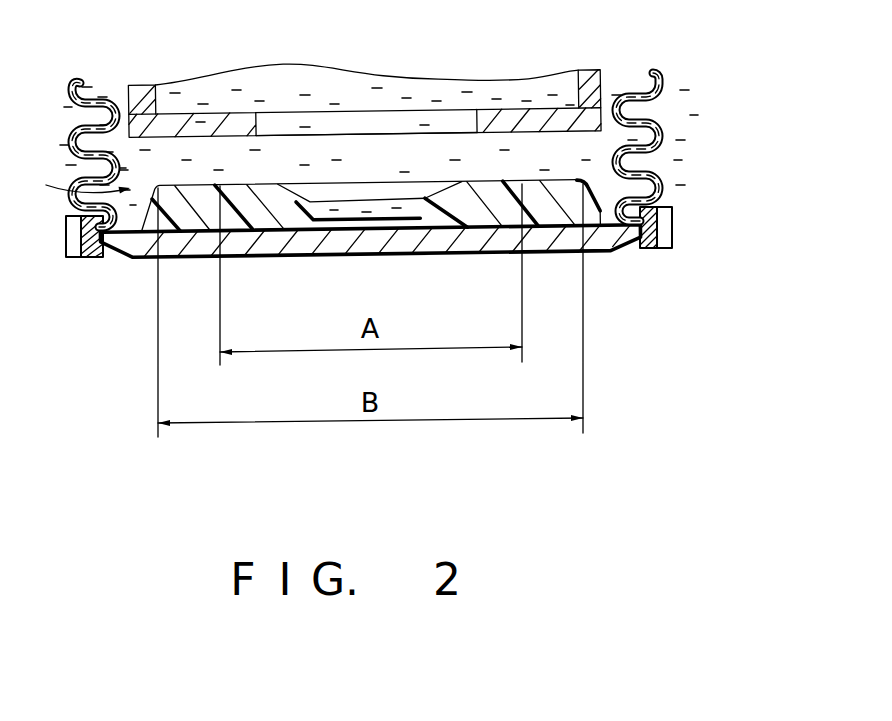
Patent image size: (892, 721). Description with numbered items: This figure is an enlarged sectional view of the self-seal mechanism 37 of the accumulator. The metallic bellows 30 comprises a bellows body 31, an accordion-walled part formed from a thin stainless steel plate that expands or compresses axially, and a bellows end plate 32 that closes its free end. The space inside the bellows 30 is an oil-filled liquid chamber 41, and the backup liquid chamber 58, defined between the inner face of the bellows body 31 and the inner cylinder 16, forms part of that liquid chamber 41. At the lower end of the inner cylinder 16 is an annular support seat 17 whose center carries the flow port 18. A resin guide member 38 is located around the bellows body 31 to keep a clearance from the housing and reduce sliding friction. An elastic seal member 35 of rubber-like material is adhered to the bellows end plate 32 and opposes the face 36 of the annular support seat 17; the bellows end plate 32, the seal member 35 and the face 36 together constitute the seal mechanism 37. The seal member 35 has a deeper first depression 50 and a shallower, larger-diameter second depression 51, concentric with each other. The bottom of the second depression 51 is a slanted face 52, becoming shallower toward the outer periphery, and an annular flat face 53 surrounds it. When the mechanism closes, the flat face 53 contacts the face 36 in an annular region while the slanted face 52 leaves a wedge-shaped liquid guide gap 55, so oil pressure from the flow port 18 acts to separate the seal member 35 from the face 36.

The inner cylinder 16 is at (598, 88).
The annular support seat 17 is at (521, 116).
The flow port 18 is at (465, 124).
The metallic bellows 30 is at (683, 125).
The bellows body 31 is at (662, 185).
The bellows end plate 32 is at (456, 240).
The elastic seal member 35 is at (280, 225).
The face of the annular support seat 36 is at (196, 140).
The seal mechanism 37 is at (71, 180).
The guide member 38 is at (85, 258).
The liquid chamber 41 is at (287, 78).
The first depression 50 is at (358, 205).
The second depression 51 is at (433, 195).
The slanted face 52 is at (463, 183).
The annular flat face 53 is at (576, 183).
The liquid guide gap 55 is at (278, 184).
The backup liquid chamber 58 is at (109, 88).